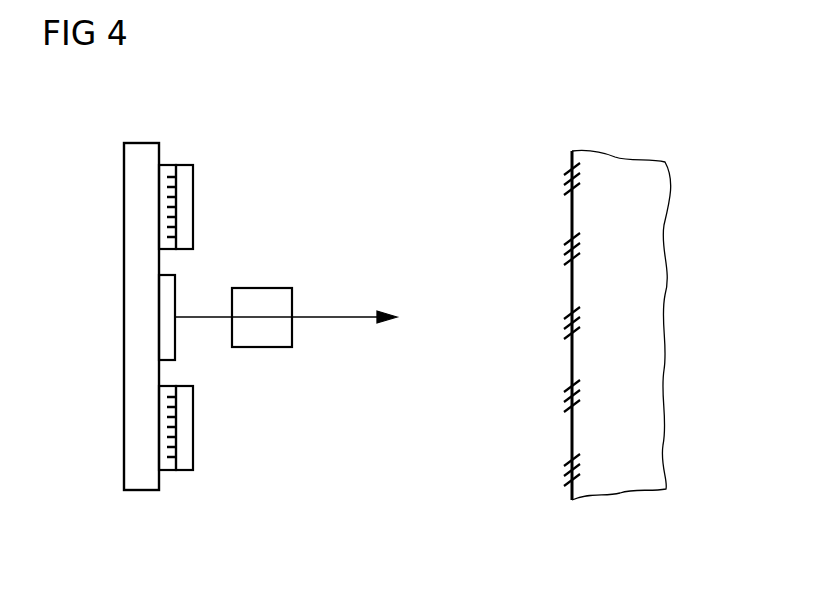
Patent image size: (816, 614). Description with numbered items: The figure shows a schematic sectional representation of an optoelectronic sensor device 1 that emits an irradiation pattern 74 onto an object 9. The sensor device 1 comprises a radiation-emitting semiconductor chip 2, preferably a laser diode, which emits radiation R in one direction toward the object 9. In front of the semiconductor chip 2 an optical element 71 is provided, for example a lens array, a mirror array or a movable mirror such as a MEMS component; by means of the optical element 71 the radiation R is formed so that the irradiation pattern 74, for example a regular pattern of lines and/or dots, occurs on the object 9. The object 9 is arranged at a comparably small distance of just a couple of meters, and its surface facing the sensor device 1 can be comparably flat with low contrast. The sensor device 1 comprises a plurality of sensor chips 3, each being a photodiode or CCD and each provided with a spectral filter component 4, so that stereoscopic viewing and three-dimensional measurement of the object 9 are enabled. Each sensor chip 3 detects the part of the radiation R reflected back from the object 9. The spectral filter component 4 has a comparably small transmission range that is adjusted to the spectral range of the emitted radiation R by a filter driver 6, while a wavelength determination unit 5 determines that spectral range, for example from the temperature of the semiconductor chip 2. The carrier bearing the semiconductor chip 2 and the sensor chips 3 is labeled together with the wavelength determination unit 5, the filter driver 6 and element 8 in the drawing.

The optoelectronic sensor device 1 is at (112, 315).
The radiation-emitting semiconductor chip 2 is at (178, 290).
The sensor chip 3 is at (167, 163).
The spectral filter component 4 is at (193, 205).
The wavelength determination unit 5 is at (140, 291).
The filter driver 6 is at (140, 291).
The carrier 8 is at (141, 143).
The object 9 is at (656, 329).
The optical element 71 is at (262, 350).
The irradiation pattern 74 is at (572, 353).
The radiation R is at (338, 315).